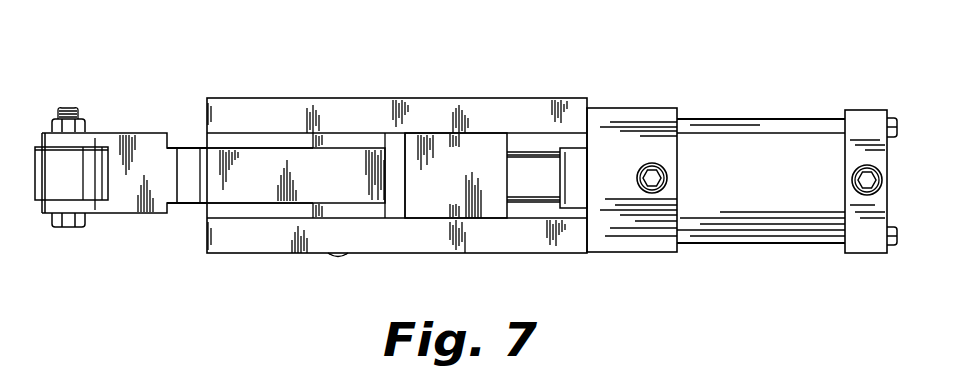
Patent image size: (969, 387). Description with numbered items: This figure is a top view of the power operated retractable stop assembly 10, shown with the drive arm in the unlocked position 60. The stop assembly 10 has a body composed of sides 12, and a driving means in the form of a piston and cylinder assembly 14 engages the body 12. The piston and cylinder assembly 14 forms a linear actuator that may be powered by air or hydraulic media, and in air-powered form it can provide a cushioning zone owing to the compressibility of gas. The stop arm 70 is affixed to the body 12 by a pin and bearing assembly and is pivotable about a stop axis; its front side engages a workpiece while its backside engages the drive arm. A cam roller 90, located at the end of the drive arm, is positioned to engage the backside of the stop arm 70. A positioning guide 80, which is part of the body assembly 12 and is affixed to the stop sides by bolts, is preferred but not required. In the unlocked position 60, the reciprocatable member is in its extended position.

The stop assembly 10 is at (592, 72).
The body 12 is at (370, 98).
The piston and cylinder assembly 14 is at (724, 119).
The unlocked position 60 is at (138, 135).
The stop arm 70 is at (266, 147).
The positioning guide 80 is at (483, 133).
The cam roller 90 is at (68, 140).